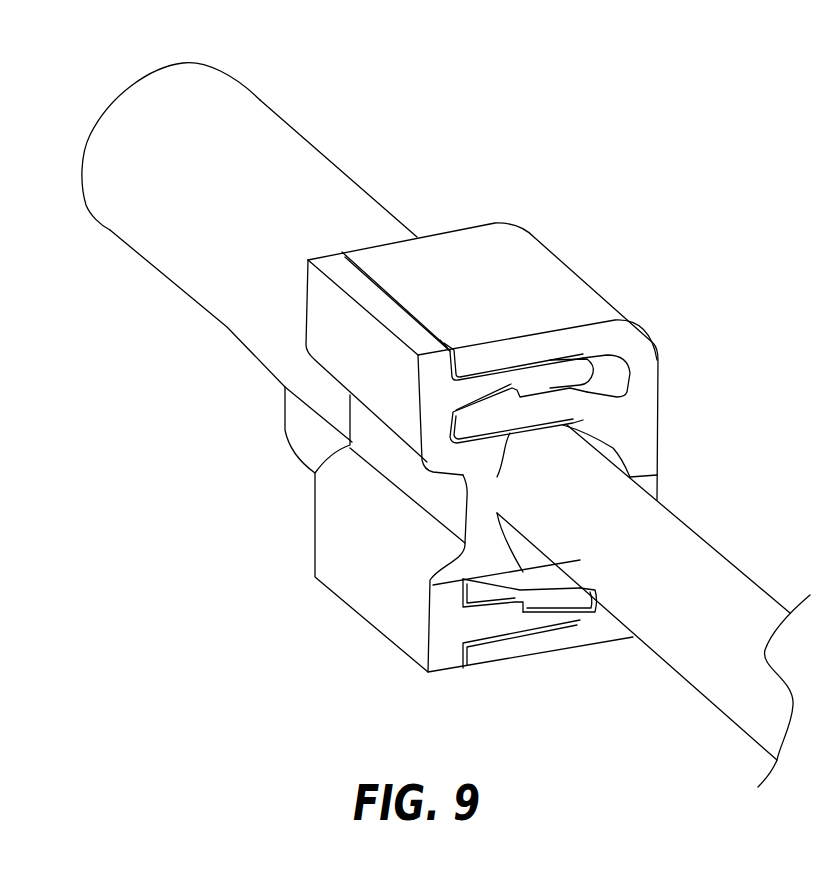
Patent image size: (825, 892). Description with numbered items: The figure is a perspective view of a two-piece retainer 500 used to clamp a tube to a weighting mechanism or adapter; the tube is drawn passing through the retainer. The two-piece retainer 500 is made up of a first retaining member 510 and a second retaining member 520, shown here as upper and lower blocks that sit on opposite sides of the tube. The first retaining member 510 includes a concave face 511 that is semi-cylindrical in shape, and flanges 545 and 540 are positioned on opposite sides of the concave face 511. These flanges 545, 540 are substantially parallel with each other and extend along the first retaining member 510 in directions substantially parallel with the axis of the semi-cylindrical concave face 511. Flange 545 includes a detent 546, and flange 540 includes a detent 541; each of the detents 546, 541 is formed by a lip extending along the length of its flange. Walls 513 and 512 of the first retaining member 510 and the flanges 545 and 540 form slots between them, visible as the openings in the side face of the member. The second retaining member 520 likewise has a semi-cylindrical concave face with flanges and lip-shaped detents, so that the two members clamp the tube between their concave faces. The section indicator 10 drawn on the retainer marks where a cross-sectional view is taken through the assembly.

The section line 10 is at (308, 305).
The two-piece retainer 500 is at (367, 632).
The first retaining member 510 is at (647, 397).
The concave face 511 is at (647, 472).
The wall 512 is at (545, 648).
The wall 513 is at (595, 337).
The second retaining member 520 is at (322, 550).
The flange 540 is at (488, 590).
The detent 541 is at (515, 607).
The flange 545 is at (552, 408).
The detent 546 is at (512, 377).